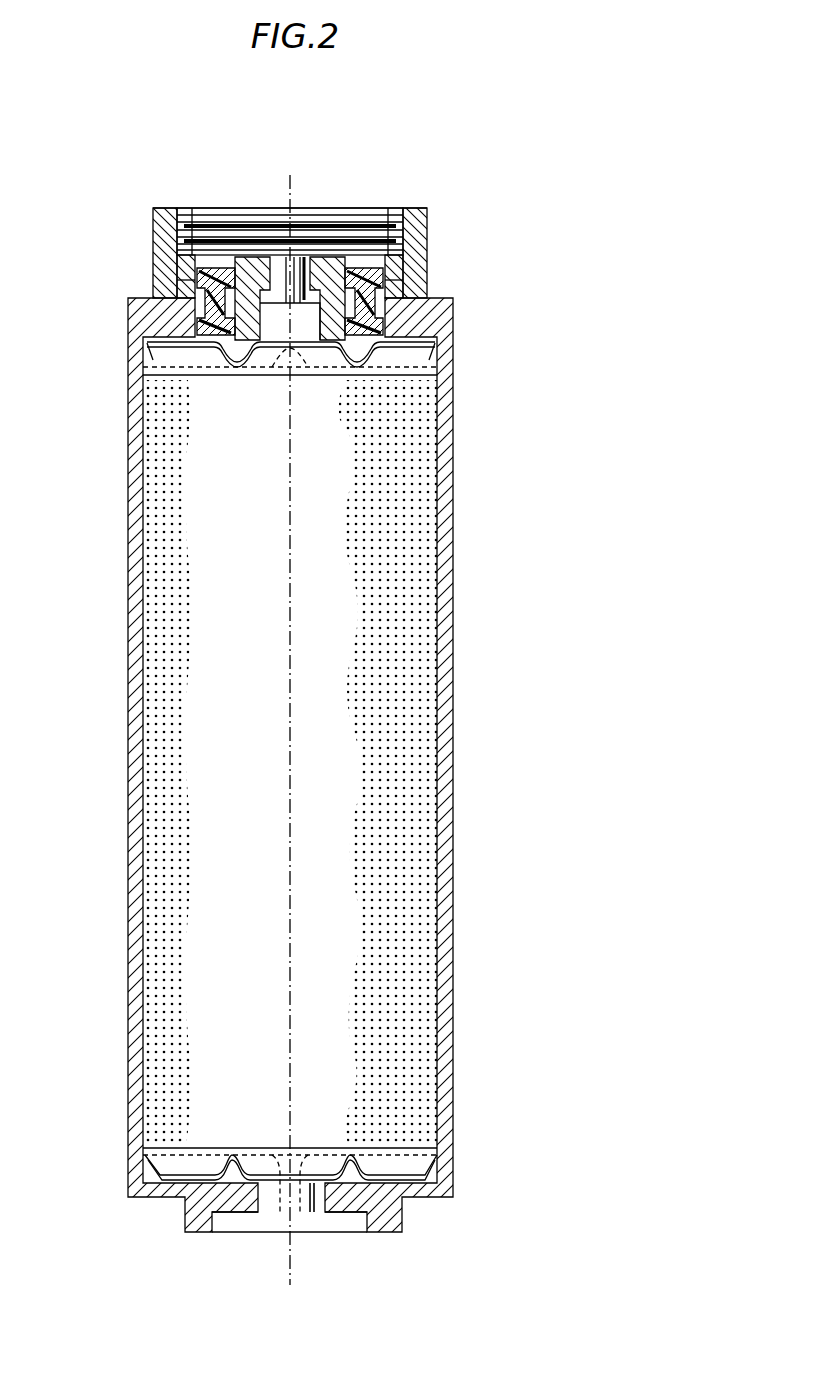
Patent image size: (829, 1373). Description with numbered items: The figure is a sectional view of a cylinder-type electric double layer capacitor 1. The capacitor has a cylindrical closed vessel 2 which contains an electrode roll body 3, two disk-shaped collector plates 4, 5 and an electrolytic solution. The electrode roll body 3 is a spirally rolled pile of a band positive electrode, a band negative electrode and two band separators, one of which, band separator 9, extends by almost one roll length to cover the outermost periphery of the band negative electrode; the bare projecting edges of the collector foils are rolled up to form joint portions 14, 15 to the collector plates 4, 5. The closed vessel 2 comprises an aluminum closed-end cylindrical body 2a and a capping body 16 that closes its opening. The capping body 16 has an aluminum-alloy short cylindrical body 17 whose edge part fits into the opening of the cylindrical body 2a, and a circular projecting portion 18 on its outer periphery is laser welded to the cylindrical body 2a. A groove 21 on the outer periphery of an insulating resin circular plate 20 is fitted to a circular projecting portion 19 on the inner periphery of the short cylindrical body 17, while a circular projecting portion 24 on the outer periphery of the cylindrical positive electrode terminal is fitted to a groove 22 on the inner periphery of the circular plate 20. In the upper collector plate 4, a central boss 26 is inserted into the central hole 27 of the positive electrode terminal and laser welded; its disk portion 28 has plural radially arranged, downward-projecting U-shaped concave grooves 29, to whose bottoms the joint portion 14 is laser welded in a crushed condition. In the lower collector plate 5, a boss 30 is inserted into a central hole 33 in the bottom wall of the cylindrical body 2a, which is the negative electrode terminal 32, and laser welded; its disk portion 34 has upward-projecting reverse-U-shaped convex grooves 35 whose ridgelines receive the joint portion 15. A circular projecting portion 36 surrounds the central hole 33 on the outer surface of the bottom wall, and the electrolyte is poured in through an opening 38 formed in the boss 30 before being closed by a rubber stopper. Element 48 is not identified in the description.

The cylinder-type electric double layer capacitor 1 is at (534, 560).
The closed vessel 2 is at (455, 665).
The closed-end cylindrical body 2a is at (450, 752).
The electrode roll body 3 is at (205, 833).
The disk-shaped collector plate 4 is at (158, 366).
The disk-shaped collector plate 5 is at (176, 1166).
The band separator 9 is at (190, 705).
The joint portion 14 is at (410, 355).
The joint portion 15 is at (412, 1163).
The capping body 16 is at (433, 212).
The short cylindrical body 17 is at (149, 216).
The circular projecting portion 18 is at (128, 300).
The circular projecting portion 19 is at (176, 285).
The circular plate 20 is at (387, 265).
The groove 21 is at (392, 300).
The groove 22 is at (347, 290).
The circular projecting portion 24 is at (247, 340).
The boss 26 is at (298, 262).
The central hole 27 is at (262, 282).
The disk portion 28 is at (437, 318).
The concave grooves 29 is at (168, 352).
The boss 30 is at (313, 1213).
The negative electrode terminal 32 is at (152, 1200).
The central hole 33 is at (253, 1232).
The disk portion 34 is at (410, 1182).
The convex grooves 35 is at (350, 1157).
The circular projecting portion 36 is at (200, 1233).
The opening 38 is at (293, 1233).
The vent member 48 is at (244, 252).